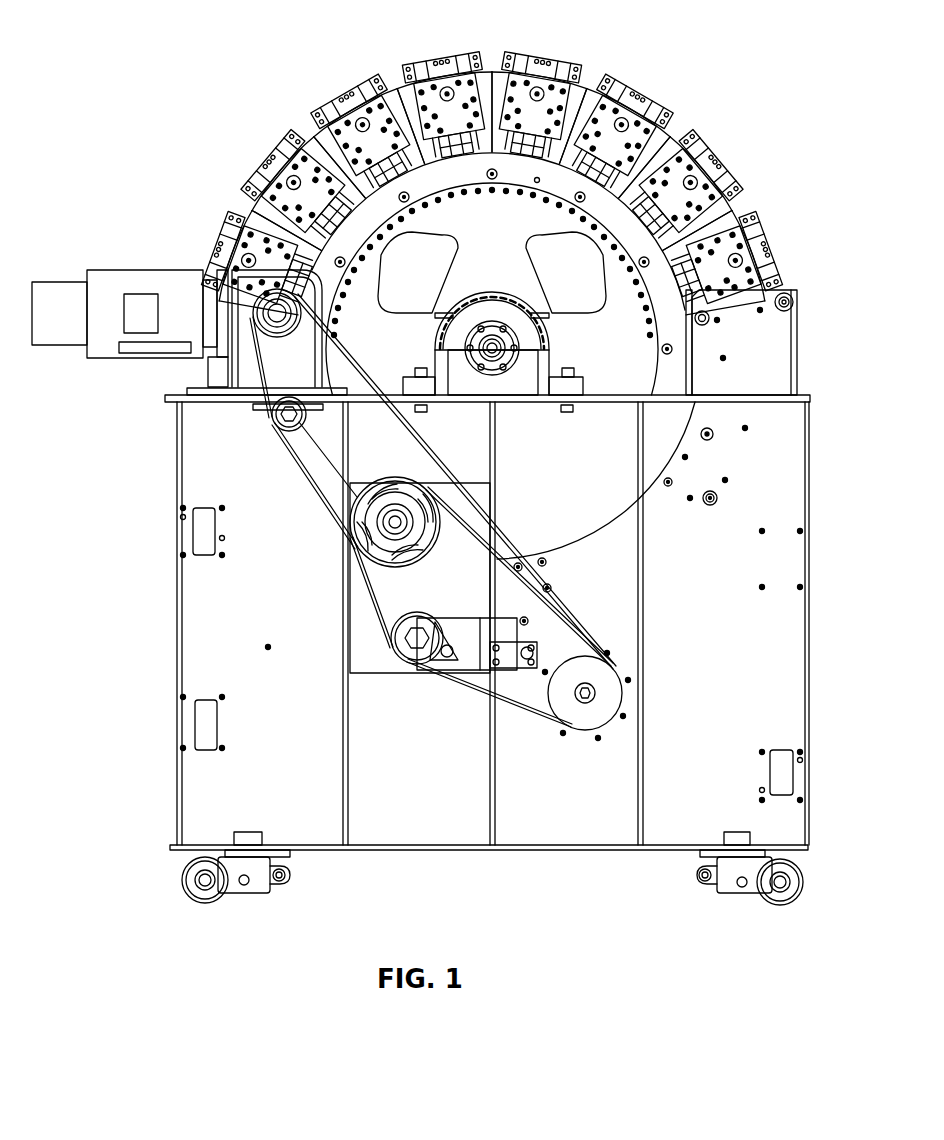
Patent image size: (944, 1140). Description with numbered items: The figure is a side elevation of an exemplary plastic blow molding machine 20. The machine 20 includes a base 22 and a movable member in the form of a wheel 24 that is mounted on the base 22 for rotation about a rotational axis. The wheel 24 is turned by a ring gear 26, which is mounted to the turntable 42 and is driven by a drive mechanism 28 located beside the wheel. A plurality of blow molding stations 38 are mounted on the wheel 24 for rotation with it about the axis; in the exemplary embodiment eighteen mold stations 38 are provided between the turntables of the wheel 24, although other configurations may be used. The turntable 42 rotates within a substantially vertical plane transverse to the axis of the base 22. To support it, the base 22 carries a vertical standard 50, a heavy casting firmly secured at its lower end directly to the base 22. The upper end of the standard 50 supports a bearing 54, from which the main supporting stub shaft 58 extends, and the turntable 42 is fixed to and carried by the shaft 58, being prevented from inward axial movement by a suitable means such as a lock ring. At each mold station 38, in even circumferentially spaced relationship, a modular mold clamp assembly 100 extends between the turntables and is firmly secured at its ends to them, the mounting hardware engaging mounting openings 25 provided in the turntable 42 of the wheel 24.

The plastic blow molding machine 20 is at (228, 60).
The base 22 is at (797, 447).
The wheel 24 is at (543, 63).
The mounting openings 25 is at (533, 195).
The ring gear 26 is at (524, 274).
The drive mechanism 28 is at (240, 300).
The blow molding station 38 is at (348, 106).
The turntable 42 is at (627, 372).
The vertical standard 50 is at (505, 384).
The bearing 54 is at (500, 375).
The stub shaft 58 is at (505, 347).
The mold clamp assembly 100 is at (446, 64).